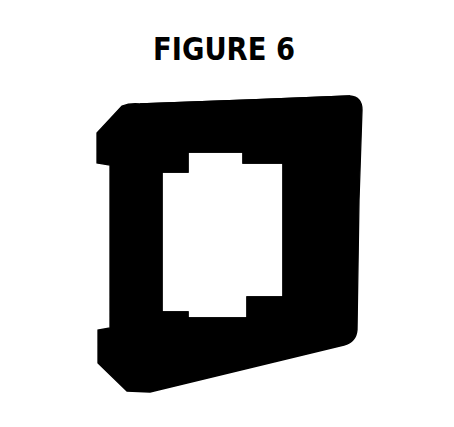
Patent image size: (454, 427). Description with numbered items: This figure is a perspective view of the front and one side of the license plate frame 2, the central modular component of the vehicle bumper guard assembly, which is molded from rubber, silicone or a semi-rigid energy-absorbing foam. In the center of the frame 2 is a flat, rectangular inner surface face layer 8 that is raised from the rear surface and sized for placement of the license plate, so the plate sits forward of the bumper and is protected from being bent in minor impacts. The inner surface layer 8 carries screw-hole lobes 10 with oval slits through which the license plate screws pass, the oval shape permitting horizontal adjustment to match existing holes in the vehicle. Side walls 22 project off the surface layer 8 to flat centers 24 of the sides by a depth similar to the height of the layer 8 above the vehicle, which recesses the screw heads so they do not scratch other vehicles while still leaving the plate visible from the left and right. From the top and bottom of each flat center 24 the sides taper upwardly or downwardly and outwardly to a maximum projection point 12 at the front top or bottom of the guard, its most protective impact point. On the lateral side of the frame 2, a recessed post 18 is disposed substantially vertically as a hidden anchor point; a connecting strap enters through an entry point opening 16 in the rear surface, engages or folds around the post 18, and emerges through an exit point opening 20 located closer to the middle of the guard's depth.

The license plate frame 2 is at (327, 93).
The maximum projection point 12 is at (355, 115).
The side walls 22 is at (335, 232).
The flat center of the sides 24 is at (348, 260).
The inner surface face layer 8 is at (335, 290).
The exit point opening 20 is at (112, 220).
The post 18 is at (113, 268).
The entry point opening 16 is at (113, 317).
The screw-hole lobes 10 is at (267, 163).